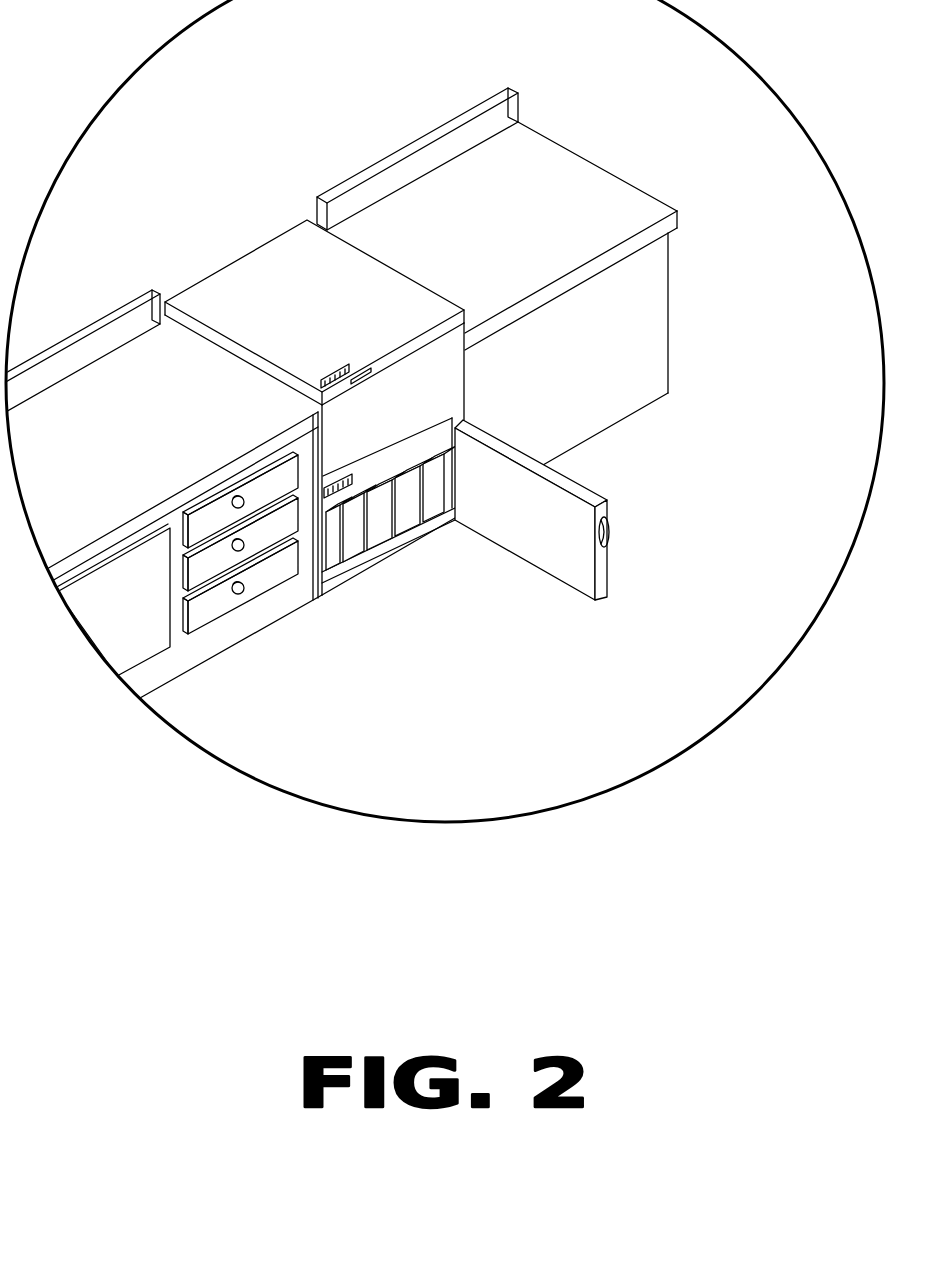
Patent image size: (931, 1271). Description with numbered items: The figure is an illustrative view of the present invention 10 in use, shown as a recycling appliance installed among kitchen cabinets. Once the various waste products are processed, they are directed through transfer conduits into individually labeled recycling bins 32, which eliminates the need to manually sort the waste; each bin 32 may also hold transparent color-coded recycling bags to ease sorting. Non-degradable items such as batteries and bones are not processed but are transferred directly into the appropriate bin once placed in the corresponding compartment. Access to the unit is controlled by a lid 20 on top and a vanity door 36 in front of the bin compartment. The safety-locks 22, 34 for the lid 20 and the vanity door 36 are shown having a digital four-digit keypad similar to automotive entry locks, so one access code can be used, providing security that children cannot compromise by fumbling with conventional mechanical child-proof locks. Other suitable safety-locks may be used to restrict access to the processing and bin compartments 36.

The present invention 10 is at (374, 381).
The lid 20 is at (192, 302).
The safety-lock 22 is at (332, 367).
The recycling bins 32 is at (486, 547).
The safety-lock 34 is at (335, 508).
The vanity door 36 is at (462, 426).